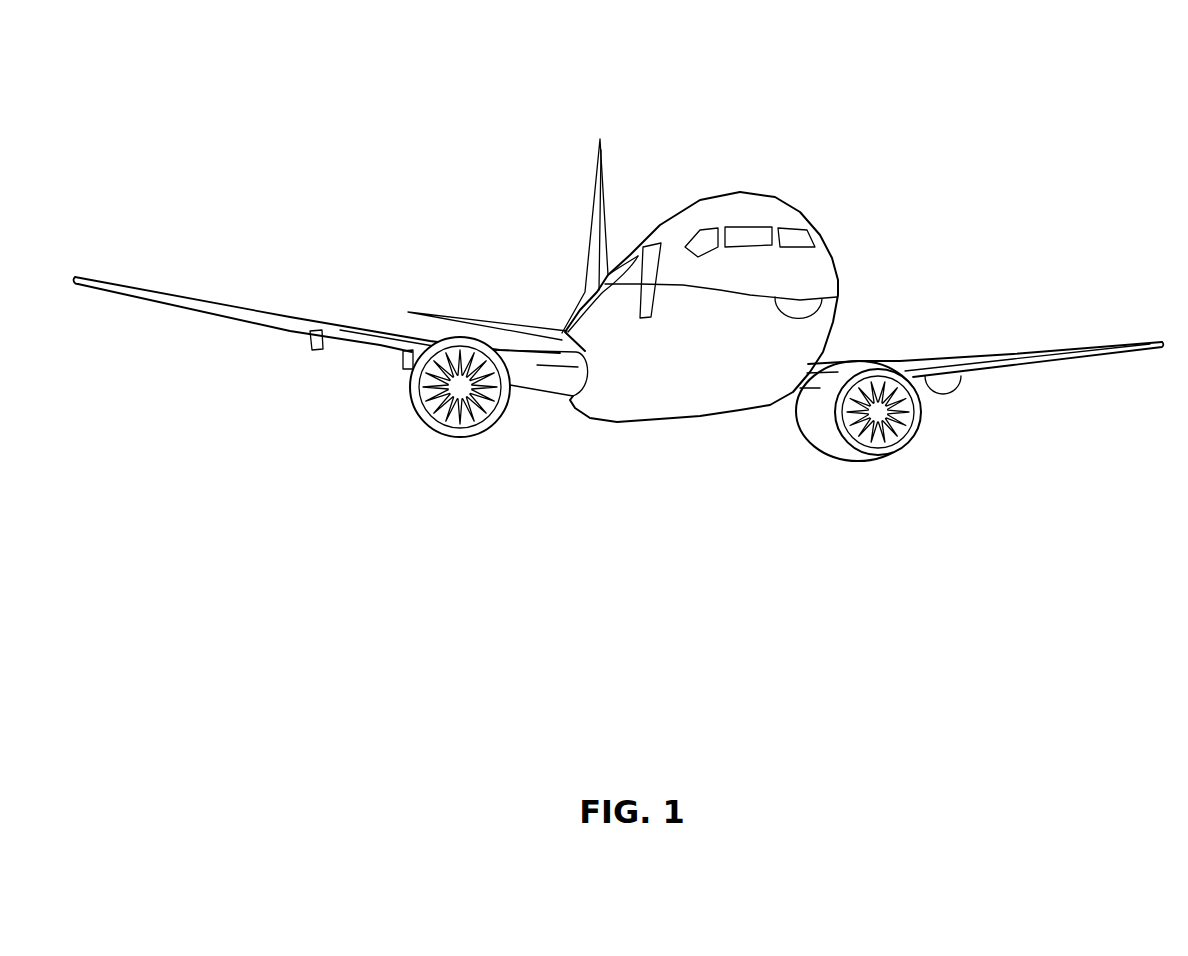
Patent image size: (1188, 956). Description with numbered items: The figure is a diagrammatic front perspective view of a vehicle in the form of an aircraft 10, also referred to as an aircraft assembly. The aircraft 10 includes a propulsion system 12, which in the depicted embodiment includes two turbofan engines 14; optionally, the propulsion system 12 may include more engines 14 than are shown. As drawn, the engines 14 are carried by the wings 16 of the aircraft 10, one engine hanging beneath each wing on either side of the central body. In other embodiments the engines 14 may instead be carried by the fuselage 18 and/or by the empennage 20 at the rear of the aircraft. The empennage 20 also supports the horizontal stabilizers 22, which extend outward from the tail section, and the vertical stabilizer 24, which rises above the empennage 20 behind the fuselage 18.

The aircraft 10 is at (346, 80).
The propulsion system 12 is at (975, 451).
The turbofan engines 14 is at (458, 437).
The wings 16 is at (222, 302).
The fuselage 18 is at (833, 262).
The empennage 20 is at (586, 292).
The horizontal stabilizers 22 is at (452, 313).
The vertical stabilizer 24 is at (596, 182).